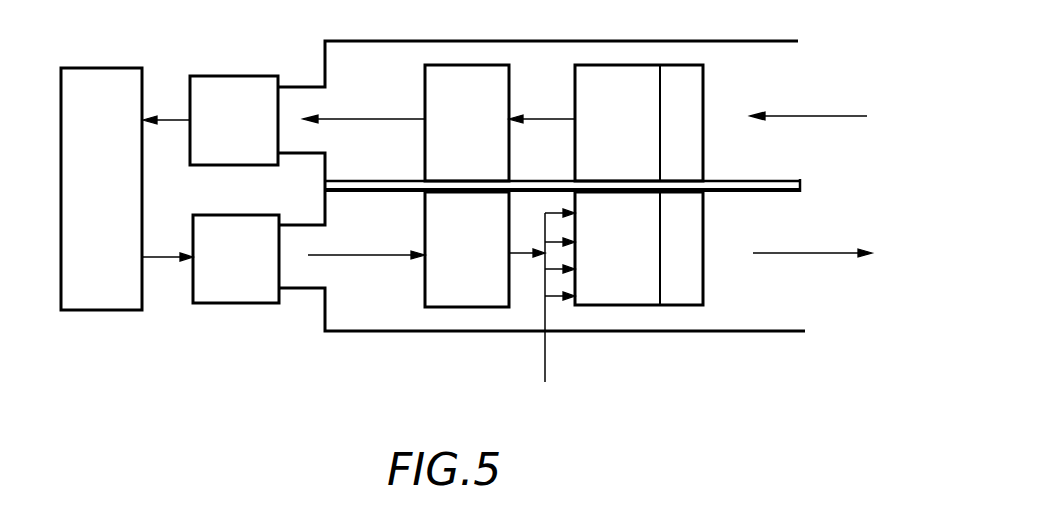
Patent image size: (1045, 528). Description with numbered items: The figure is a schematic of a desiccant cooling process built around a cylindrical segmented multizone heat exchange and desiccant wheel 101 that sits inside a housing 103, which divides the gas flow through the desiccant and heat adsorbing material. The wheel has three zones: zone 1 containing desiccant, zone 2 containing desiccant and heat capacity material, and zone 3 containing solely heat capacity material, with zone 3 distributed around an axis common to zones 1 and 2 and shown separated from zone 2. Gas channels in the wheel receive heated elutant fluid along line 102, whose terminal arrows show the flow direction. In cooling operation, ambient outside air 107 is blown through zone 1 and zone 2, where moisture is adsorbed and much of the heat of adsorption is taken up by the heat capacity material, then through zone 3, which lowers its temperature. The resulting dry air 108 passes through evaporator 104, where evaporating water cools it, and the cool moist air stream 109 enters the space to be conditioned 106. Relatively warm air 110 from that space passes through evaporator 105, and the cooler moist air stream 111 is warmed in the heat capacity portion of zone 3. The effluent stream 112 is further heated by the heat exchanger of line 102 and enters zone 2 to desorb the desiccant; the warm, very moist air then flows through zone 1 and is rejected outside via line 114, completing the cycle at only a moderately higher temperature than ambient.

The zone 1 is at (688, 133).
The zone 2 is at (628, 133).
The zone 3 is at (476, 134).
The segmented multizone heat exchange and desiccant wheel 101 is at (703, 90).
The heated elutant fluid line 102 is at (545, 352).
The housing 103 is at (702, 41).
The evaporator 104 is at (252, 134).
The evaporator 105 is at (254, 267).
The space to be conditioned 106 is at (119, 204).
The ambient outside air 107 is at (835, 116).
The dry air 108 is at (370, 118).
The cool moist air stream 109 is at (170, 118).
The relatively warm air 110 is at (163, 259).
The cooler moist air stream 111 is at (355, 257).
The effluent stream 112 is at (522, 252).
The rejection line 114 is at (820, 255).